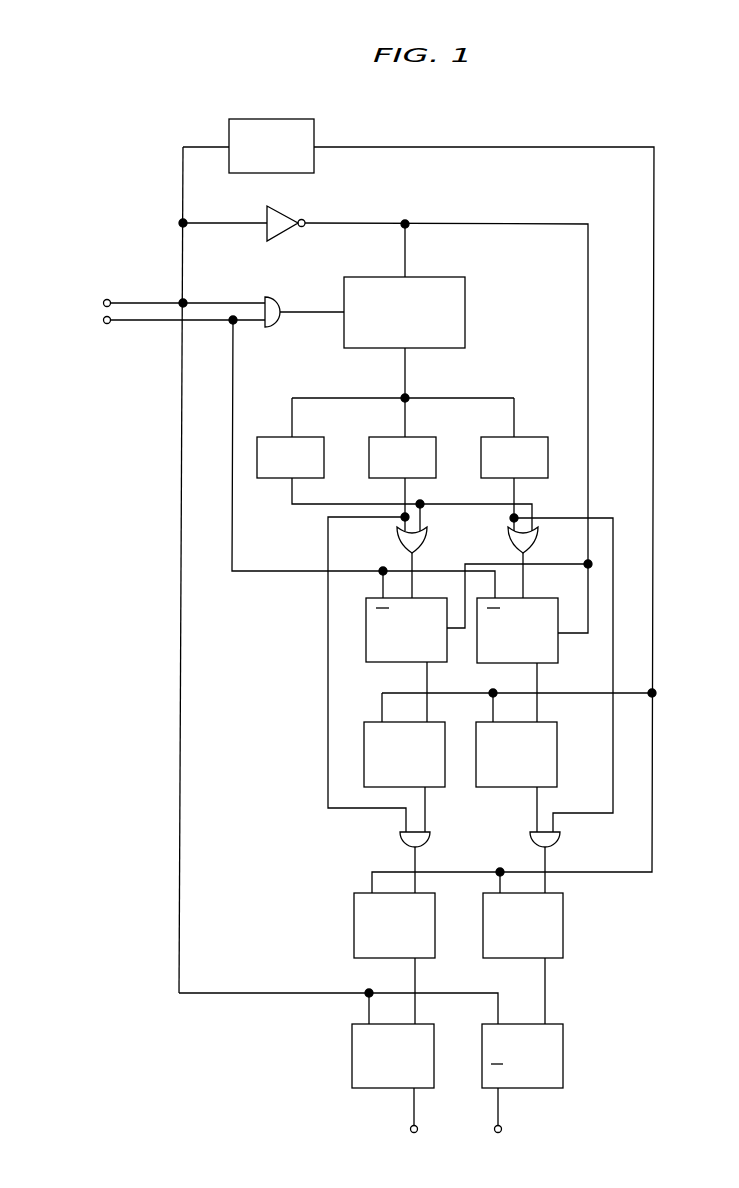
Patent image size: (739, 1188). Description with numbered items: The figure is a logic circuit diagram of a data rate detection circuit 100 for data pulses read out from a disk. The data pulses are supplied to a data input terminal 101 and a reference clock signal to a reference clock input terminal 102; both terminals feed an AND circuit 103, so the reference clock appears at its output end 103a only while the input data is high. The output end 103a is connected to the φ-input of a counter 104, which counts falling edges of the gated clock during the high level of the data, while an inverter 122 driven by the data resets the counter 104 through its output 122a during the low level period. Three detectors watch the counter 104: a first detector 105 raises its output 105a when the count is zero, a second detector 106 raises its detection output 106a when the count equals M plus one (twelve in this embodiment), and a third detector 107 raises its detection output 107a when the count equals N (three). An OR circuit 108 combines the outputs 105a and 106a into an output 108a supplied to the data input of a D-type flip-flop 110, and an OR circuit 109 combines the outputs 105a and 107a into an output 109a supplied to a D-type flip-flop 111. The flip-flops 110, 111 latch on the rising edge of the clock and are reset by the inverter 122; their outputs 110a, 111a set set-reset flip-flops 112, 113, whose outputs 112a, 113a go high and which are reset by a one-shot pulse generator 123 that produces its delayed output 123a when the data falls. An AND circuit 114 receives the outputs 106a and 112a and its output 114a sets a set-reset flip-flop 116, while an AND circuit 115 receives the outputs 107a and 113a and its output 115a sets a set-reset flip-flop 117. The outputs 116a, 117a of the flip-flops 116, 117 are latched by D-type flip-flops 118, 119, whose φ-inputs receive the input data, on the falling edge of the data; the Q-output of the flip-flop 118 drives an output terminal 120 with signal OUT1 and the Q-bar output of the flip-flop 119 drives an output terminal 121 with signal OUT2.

The data rate detection circuit 100 is at (526, 125).
The data input terminal 101 is at (109, 299).
The reference clock input terminal 102 is at (108, 324).
The AND circuit 103 is at (274, 297).
The output end of AND circuit 103a is at (309, 313).
The counter 104 is at (437, 277).
The first detector 105 is at (302, 437).
The output of first detector 105a is at (292, 504).
The second detector 106 is at (412, 437).
The detection output of second detector 106a is at (328, 546).
The third detector 107 is at (529, 437).
The detection output of third detector 107a is at (612, 518).
The OR circuit 108 is at (430, 526).
The output of OR circuit 108a is at (414, 560).
The OR circuit 109 is at (512, 518).
The output of OR circuit 109a is at (526, 560).
The D-type flip-flop 110 is at (372, 598).
The output of D-FF 110a is at (427, 680).
The D-type flip-flop 111 is at (542, 598).
The output of D-FF 111a is at (537, 680).
The set-reset flip-flop 112 is at (374, 722).
The output of RS-FF 112a is at (425, 805).
The set-reset flip-flop 113 is at (550, 722).
The output of RS-FF 113a is at (537, 800).
The AND circuit 114 is at (432, 841).
The output of AND circuit 114a is at (415, 860).
The AND circuit 115 is at (562, 841).
The output of AND circuit 115a is at (545, 860).
The set-reset flip-flop 116 is at (362, 893).
The output of RS-FF 116a is at (415, 976).
The set-reset flip-flop 117 is at (556, 893).
The output of RS-FF 117a is at (545, 978).
The D-type flip-flop 118 is at (359, 1024).
The D-type flip-flop 119 is at (557, 1024).
The output terminal 120 is at (410, 1128).
The output terminal 121 is at (502, 1128).
The inverter 122 is at (287, 214).
The output of inverter 122a is at (374, 224).
The one-shot pulse generator 123 is at (285, 119).
The output of one-shot pulse generator 123a is at (432, 147).